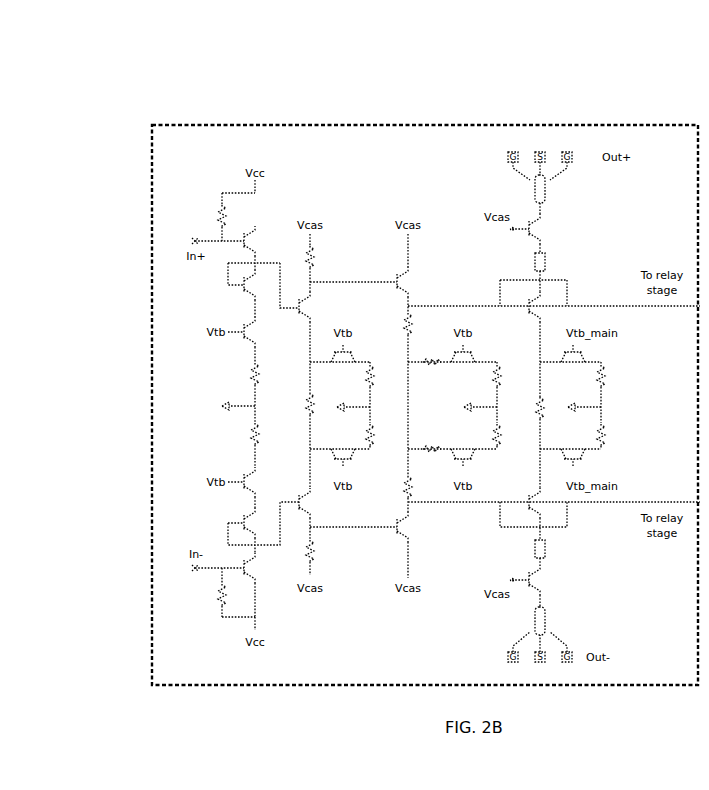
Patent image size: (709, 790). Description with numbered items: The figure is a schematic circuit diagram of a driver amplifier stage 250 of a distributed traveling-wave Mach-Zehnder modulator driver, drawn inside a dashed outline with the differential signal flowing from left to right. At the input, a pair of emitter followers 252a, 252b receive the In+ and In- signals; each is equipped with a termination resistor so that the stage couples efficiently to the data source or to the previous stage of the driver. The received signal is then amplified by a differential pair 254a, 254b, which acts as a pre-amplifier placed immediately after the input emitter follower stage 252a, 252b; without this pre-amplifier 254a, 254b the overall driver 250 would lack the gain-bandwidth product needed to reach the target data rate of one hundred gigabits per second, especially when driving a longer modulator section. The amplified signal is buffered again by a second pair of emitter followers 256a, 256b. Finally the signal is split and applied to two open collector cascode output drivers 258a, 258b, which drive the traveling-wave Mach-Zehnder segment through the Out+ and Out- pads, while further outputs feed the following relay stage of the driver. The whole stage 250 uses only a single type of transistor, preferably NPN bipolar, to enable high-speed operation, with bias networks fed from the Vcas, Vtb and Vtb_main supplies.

The driver amplifier stage 250 is at (212, 124).
The emitter follower 252a is at (203, 207).
The emitter follower 252b is at (205, 610).
The differential pair transistor 254a is at (321, 299).
The differential pair transistor 254b is at (322, 516).
The emitter follower 256a is at (418, 281).
The emitter follower 256b is at (416, 531).
The open collector cascode output driver 258a is at (551, 302).
The open collector cascode output driver 258b is at (553, 504).